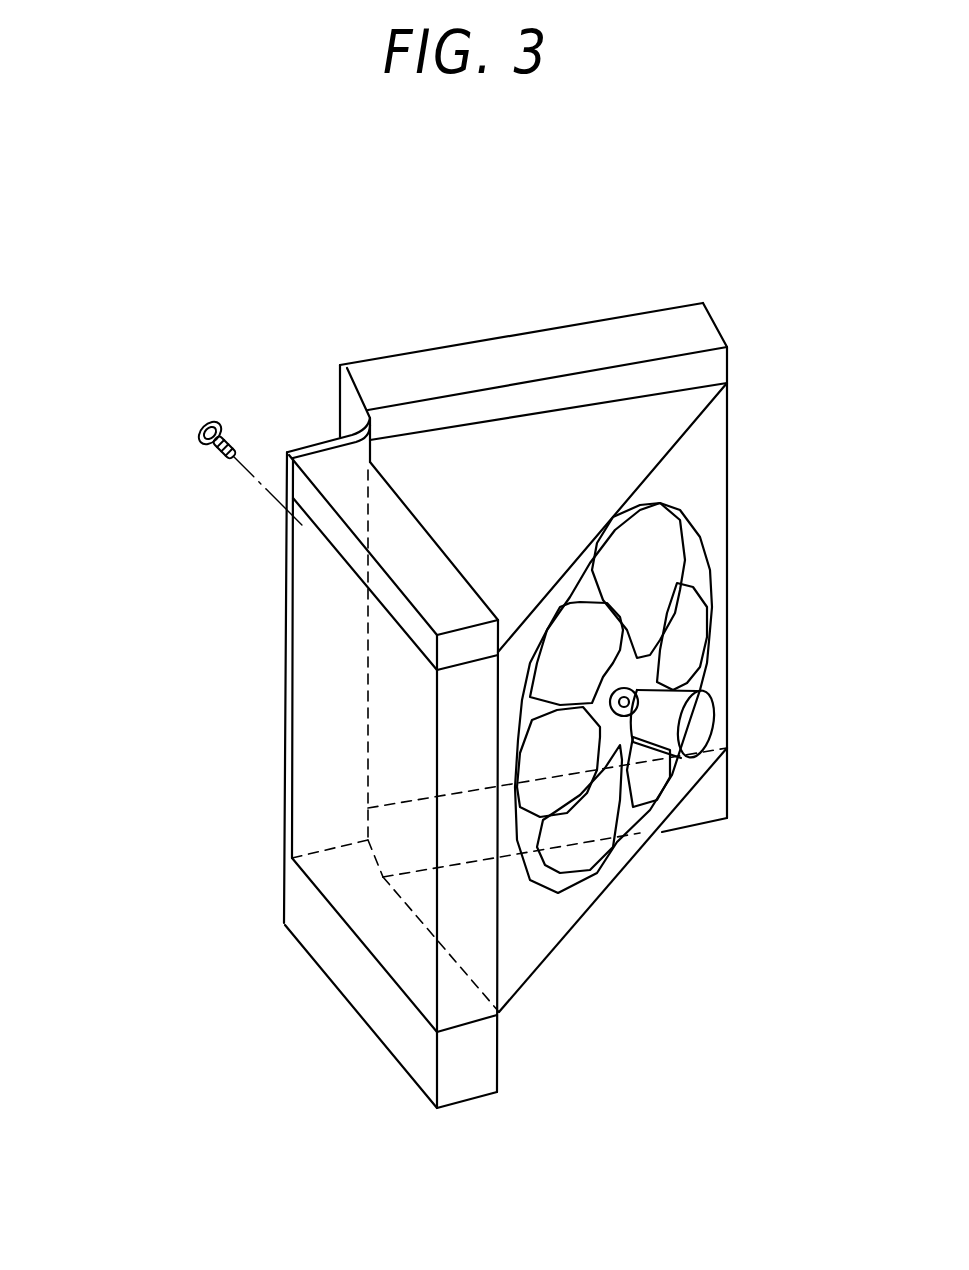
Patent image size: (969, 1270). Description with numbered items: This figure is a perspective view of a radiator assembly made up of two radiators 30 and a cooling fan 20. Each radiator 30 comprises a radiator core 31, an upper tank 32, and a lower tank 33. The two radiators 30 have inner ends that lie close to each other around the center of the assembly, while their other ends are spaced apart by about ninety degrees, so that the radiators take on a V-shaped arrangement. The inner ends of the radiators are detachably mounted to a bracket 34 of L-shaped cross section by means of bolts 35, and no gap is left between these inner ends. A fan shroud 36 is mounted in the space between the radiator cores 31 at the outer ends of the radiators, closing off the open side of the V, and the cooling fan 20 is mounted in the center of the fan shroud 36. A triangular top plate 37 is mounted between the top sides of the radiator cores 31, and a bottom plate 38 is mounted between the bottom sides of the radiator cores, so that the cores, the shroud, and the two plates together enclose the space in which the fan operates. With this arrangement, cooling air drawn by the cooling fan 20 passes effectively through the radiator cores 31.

The cooling fan 20 is at (653, 575).
The radiator 30 is at (575, 357).
The radiator core 31 is at (335, 683).
The upper tank 32 is at (345, 542).
The lower tank 33 is at (313, 913).
The bracket 34 is at (338, 403).
The bolt 35 is at (203, 424).
The fan shroud 36 is at (700, 487).
The top plate 37 is at (467, 450).
The bottom plate 38 is at (432, 870).